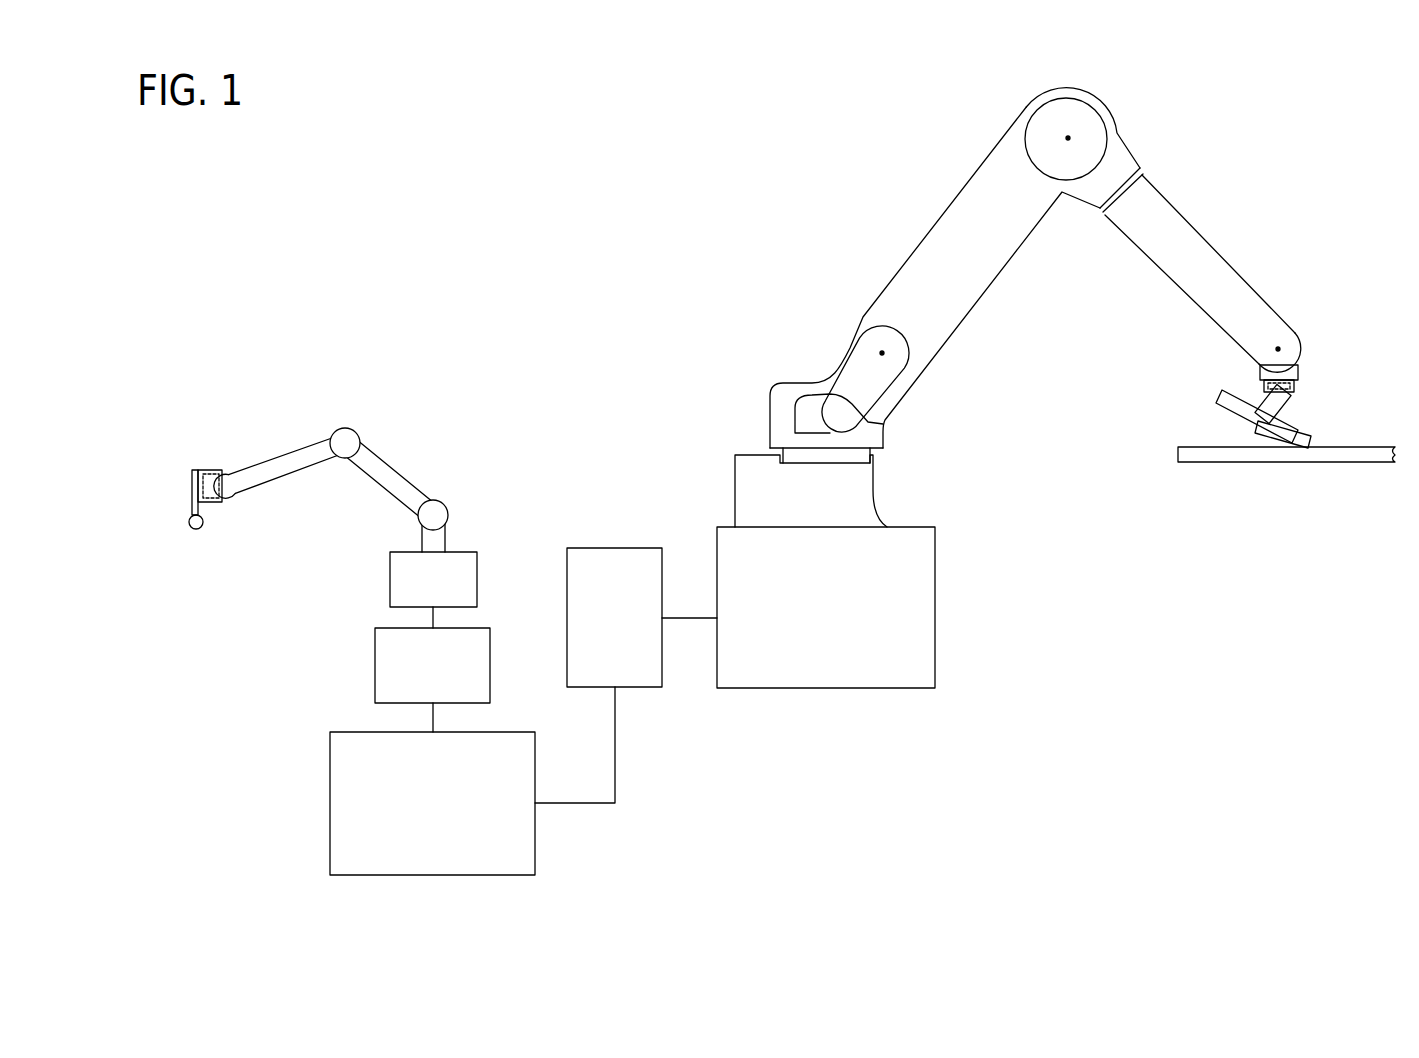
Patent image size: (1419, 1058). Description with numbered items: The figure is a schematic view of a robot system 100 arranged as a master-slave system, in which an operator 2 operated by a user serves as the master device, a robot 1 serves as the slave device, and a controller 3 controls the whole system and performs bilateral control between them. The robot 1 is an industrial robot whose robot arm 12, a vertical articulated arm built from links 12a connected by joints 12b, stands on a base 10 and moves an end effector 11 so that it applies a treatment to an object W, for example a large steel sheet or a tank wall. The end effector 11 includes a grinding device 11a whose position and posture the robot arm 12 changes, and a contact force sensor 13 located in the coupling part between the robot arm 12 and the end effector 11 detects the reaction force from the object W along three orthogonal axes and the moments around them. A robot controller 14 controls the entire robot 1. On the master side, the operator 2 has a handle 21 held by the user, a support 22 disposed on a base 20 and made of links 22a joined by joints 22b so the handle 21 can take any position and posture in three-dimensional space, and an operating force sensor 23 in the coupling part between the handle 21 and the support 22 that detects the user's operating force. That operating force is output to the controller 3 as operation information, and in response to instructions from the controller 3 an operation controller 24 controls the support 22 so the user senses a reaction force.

The robot system 100 is at (589, 142).
The robot 1 is at (705, 298).
The operator 2 is at (300, 240).
The controller 3 is at (303, 775).
The base 10 is at (935, 618).
The end effector 11 is at (1285, 400).
The grinding device 11a is at (1220, 395).
The robot arm 12 is at (900, 203).
The links 12a is at (1197, 235).
The joints 12b is at (1125, 134).
The contact force sensor 13 is at (1257, 383).
The robot controller 14 is at (613, 547).
The base 20 is at (390, 588).
The handle 21 is at (198, 532).
The support 22 is at (374, 405).
The links 22a is at (388, 462).
The joints 22b is at (340, 415).
The operating force sensor 23 is at (212, 468).
The operation controller 24 is at (375, 670).
The object W is at (1238, 462).